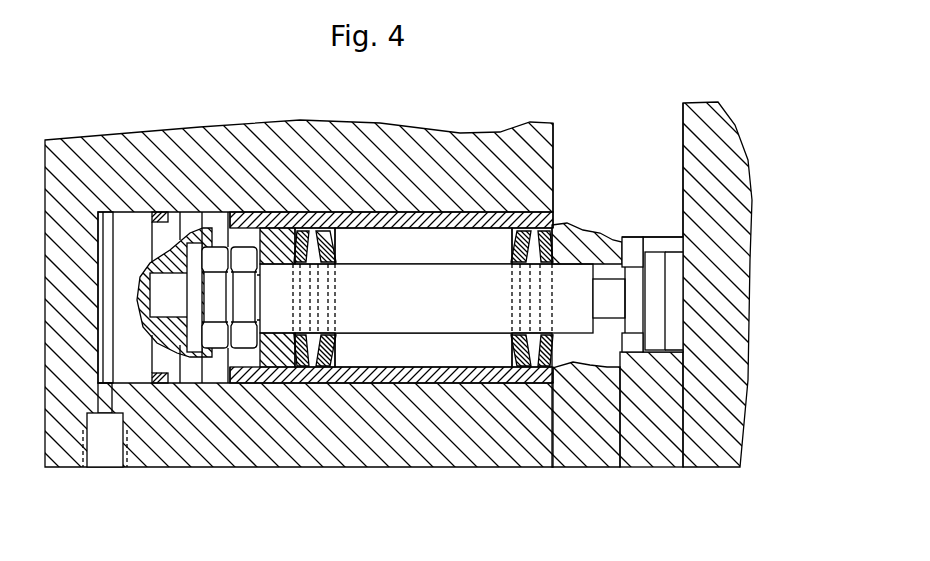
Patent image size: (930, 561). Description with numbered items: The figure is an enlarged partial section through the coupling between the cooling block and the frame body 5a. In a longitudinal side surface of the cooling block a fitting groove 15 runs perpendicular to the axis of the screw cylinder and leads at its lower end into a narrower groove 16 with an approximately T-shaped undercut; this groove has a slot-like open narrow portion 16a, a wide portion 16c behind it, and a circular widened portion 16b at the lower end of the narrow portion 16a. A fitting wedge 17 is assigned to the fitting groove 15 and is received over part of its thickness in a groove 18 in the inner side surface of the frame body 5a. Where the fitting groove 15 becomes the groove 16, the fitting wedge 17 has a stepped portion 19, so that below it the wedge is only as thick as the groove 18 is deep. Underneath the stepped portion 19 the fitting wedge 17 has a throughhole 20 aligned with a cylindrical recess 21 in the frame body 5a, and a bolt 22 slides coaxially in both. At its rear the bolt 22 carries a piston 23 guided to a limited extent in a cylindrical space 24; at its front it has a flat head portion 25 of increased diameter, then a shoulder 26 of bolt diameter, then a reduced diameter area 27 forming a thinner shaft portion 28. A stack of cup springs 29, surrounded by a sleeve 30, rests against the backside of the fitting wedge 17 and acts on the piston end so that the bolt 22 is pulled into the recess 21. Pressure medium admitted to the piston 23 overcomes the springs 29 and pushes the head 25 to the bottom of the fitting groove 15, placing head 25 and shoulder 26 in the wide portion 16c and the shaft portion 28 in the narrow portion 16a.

The frame body 5a is at (337, 140).
The fitting groove 15 is at (688, 140).
The groove having T-shaped undercut cross-section 16 is at (672, 290).
The slot-like open narrow portion 16a is at (640, 240).
The circular widened portion 16b is at (625, 345).
The wide portion 16c is at (673, 312).
The fitting wedge 17 is at (625, 150).
The groove 18 is at (530, 127).
The stepped portion 19 is at (630, 237).
The throughhole 20 is at (598, 337).
The cylindrical recess 21 is at (457, 352).
The bolt 22 is at (380, 316).
The piston 23 is at (188, 222).
The cylindrical space 24 is at (140, 210).
The flat head portion 25 is at (658, 327).
The shoulder 26 is at (660, 352).
The reduced diameter area 27 is at (610, 337).
The shaft portion 28 is at (605, 290).
The stack of cup springs 29 is at (505, 242).
The sleeve 30 is at (427, 377).